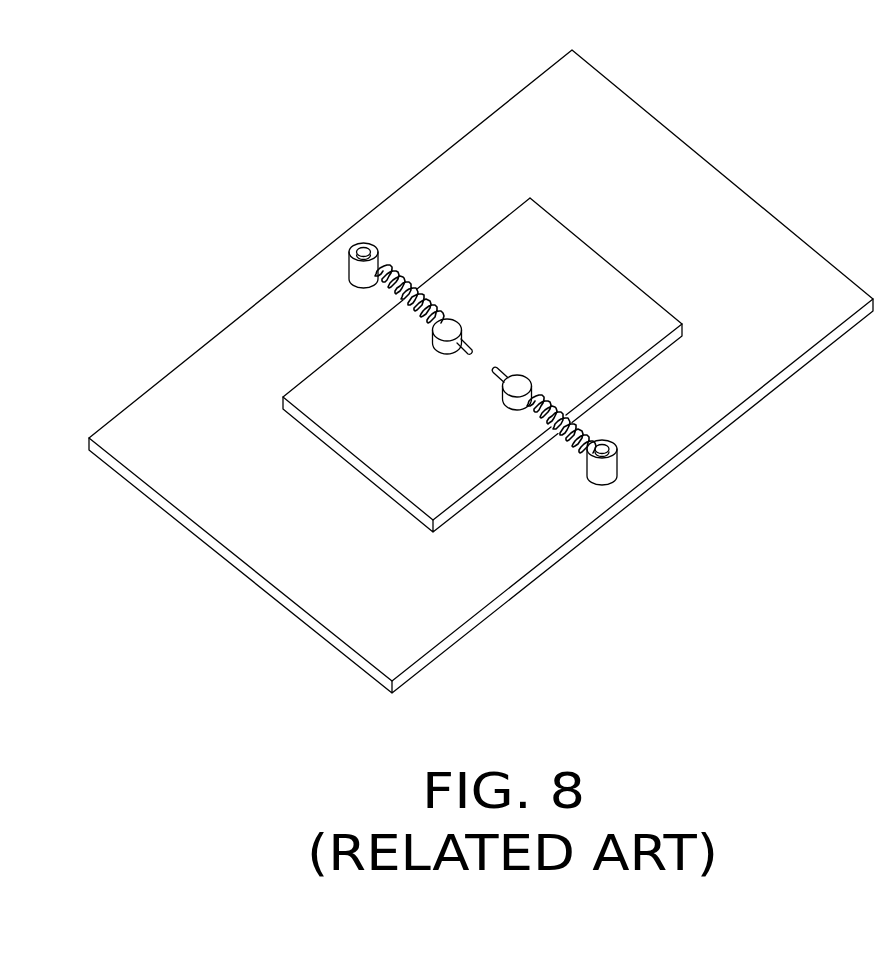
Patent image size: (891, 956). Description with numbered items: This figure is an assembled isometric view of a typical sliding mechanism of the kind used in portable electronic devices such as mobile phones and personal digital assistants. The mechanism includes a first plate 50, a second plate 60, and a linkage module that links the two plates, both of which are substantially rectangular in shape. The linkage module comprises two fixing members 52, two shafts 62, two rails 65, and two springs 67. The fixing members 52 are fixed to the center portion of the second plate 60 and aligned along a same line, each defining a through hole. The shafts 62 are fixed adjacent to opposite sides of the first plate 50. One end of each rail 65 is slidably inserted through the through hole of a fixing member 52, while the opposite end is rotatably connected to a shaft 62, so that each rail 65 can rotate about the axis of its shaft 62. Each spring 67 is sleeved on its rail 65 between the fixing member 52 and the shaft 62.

The first plate 50 is at (748, 223).
The second plate 60 is at (586, 278).
The fixing member 52 is at (462, 322).
The rail 65 is at (497, 372).
The spring 67 is at (578, 423).
The shaft 62 is at (610, 450).